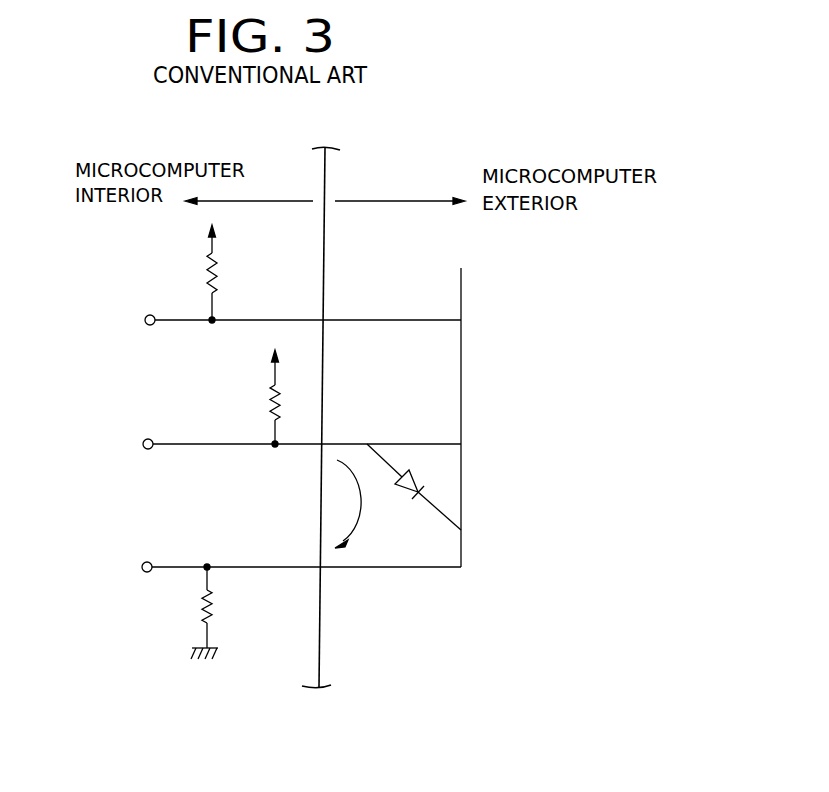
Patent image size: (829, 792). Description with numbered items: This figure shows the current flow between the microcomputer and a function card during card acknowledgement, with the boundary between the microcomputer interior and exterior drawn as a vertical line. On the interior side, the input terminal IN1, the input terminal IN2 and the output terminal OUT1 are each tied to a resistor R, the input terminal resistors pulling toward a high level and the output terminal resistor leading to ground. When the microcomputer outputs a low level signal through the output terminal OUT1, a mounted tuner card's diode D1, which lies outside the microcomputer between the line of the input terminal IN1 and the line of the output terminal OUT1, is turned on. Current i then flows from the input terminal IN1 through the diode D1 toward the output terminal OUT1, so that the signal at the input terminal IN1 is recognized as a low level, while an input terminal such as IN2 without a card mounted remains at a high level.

The resistor R is at (247, 442).
The diode D1 is at (414, 487).
The input terminal IN1 is at (128, 443).
The input terminal IN2 is at (128, 319).
The output terminal OUT1 is at (87, 566).
The current i is at (348, 504).